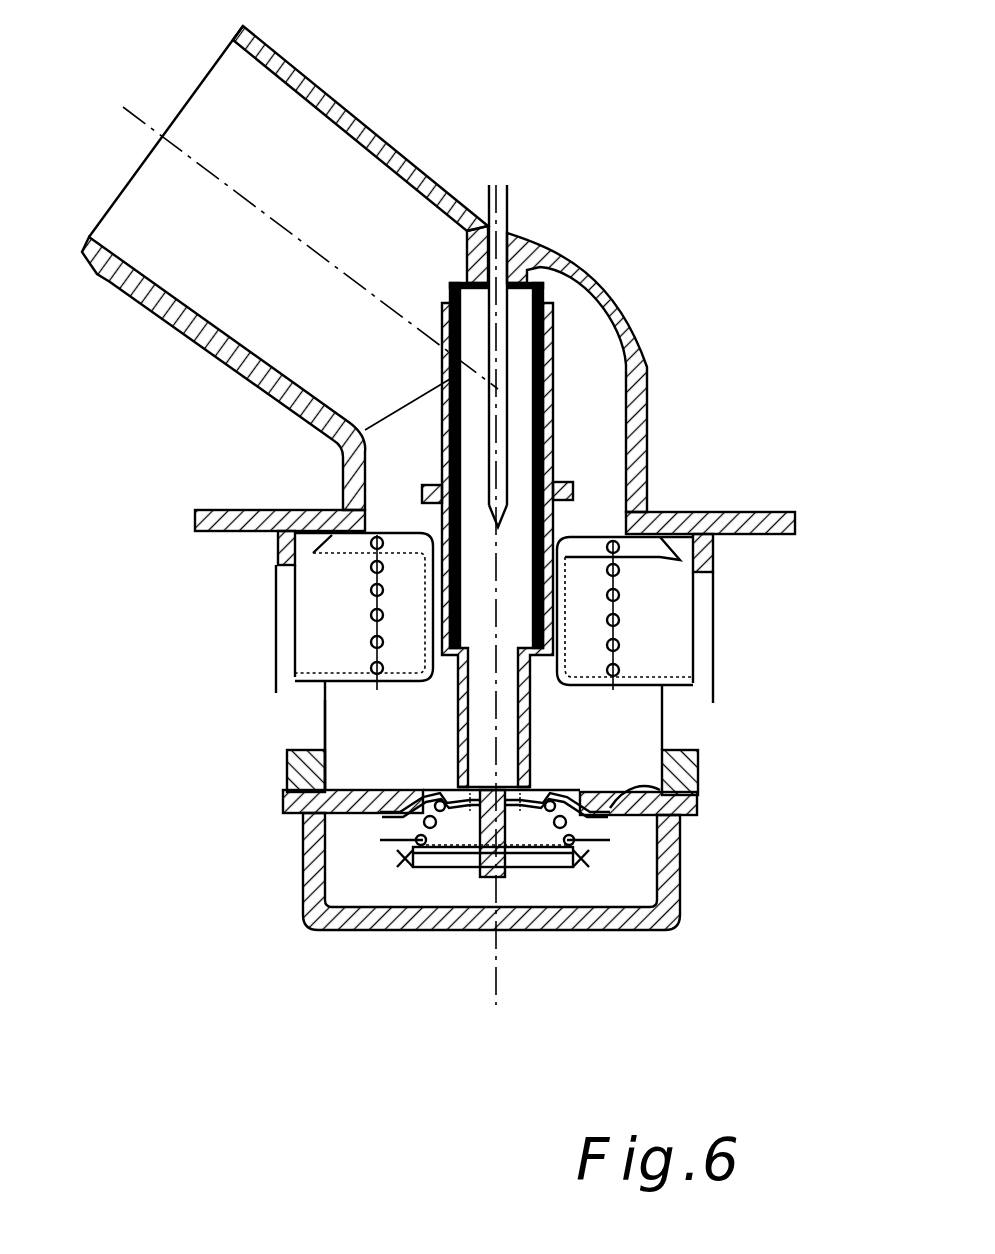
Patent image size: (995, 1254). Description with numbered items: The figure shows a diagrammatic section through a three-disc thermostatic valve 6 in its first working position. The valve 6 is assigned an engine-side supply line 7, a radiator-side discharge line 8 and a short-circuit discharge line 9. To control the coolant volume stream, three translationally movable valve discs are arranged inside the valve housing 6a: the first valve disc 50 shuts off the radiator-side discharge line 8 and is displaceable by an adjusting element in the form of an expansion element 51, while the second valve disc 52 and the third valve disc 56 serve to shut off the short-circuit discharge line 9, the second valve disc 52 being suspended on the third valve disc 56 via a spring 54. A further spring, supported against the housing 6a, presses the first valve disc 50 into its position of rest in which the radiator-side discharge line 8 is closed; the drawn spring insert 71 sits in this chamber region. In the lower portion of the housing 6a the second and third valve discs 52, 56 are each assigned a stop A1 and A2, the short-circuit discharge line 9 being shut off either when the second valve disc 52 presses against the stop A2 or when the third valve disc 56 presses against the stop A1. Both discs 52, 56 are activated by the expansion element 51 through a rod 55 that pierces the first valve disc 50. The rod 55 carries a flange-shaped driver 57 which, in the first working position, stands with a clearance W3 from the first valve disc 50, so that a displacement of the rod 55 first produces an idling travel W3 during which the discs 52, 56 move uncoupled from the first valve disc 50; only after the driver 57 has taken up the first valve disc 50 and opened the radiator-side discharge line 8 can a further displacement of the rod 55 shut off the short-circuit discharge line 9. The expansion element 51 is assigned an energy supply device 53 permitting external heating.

The three-disc thermostatic valve 6 is at (640, 152).
The valve housing 6a is at (715, 512).
The engine-side supply line 7 is at (245, 605).
The radiator-side discharge line 8 is at (243, 142).
The short-circuit discharge line 9 is at (447, 923).
The first valve disc 50 is at (384, 530).
The expansion element 51 is at (516, 437).
The second valve disc 52 is at (580, 868).
The energy supply device 53 is at (509, 232).
The spring 54 is at (405, 835).
The rod 55 is at (458, 727).
The third valve disc 56 is at (620, 832).
The flange-shaped driver 57 is at (423, 490).
The spring insert 71 is at (368, 640).
The stop A1 is at (610, 794).
The stop A2 is at (568, 925).
The clearance W3 is at (585, 560).